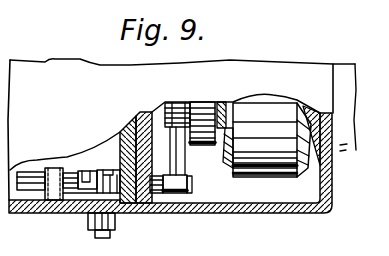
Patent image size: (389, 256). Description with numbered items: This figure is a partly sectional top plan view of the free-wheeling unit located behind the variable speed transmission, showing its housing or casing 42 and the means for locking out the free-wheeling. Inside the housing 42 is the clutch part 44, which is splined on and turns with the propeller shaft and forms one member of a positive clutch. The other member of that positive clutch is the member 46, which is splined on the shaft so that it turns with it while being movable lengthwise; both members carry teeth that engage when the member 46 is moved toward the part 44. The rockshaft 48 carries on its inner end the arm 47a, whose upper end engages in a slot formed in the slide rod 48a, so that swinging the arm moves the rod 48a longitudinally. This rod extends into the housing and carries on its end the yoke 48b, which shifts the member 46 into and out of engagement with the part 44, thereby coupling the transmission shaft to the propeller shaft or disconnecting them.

The housing 42 is at (236, 213).
The clutch part 44 is at (273, 173).
The member 46 is at (203, 146).
The arm 47a is at (80, 172).
The rockshaft 48 is at (113, 232).
The slide rod 48a is at (40, 186).
The yoke 48b is at (193, 163).